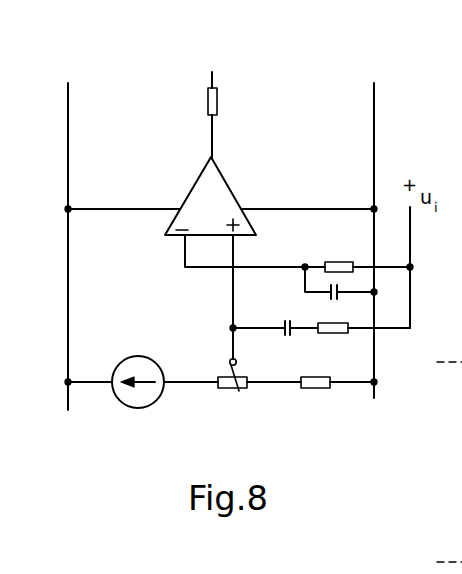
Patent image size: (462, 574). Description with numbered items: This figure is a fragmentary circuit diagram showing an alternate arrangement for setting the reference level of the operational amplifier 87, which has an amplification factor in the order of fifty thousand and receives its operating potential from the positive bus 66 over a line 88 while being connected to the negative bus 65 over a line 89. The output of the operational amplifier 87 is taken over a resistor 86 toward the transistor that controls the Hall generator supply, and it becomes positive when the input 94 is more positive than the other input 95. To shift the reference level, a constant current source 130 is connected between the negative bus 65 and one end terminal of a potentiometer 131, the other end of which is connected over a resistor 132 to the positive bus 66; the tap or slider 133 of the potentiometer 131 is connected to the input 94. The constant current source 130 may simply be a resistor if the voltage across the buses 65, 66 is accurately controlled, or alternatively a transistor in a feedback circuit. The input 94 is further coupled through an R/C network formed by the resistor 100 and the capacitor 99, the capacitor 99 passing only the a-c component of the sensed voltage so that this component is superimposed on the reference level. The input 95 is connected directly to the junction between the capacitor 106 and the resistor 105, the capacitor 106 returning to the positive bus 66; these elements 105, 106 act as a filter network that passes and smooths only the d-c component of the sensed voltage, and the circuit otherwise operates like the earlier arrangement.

The negative bus 65 is at (66, 385).
The positive bus 66 is at (377, 386).
The resistor 86 is at (217, 102).
The operational amplifier 87 is at (232, 203).
The line 88 is at (334, 208).
The line 89 is at (122, 208).
The input 94 is at (257, 237).
The input 95 is at (183, 238).
The capacitor 99 is at (286, 323).
The resistor 100 is at (335, 330).
The resistor 105 is at (340, 257).
The capacitor 106 is at (332, 296).
The constant current source 130 is at (145, 357).
The potentiometer 131 is at (232, 388).
The resistor 132 is at (316, 388).
The tap or slider 133 is at (236, 362).